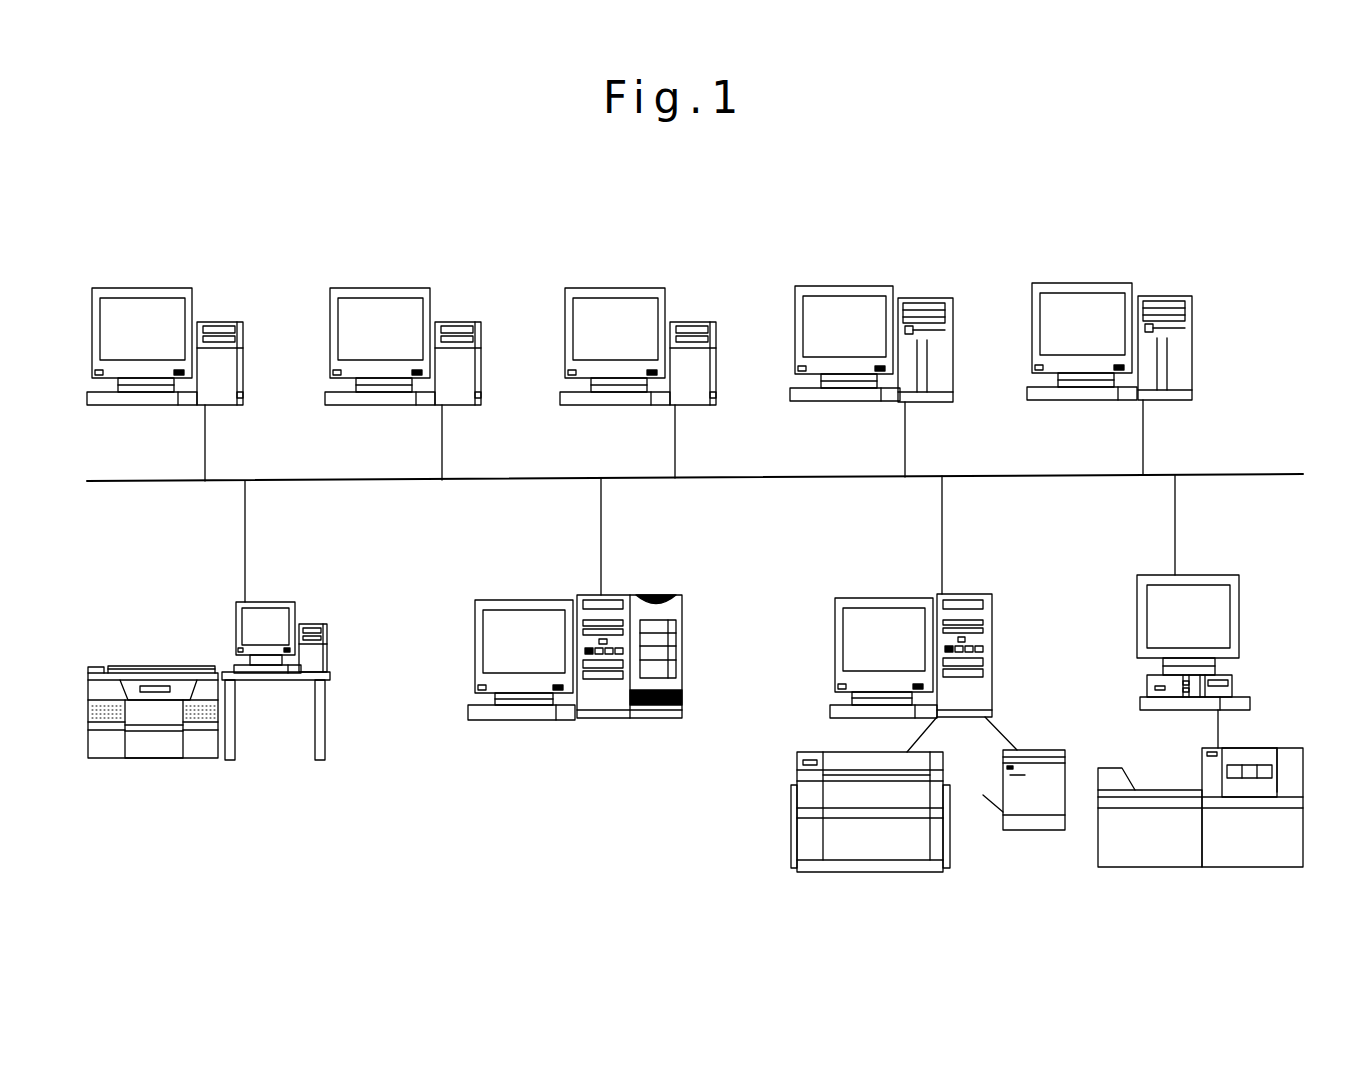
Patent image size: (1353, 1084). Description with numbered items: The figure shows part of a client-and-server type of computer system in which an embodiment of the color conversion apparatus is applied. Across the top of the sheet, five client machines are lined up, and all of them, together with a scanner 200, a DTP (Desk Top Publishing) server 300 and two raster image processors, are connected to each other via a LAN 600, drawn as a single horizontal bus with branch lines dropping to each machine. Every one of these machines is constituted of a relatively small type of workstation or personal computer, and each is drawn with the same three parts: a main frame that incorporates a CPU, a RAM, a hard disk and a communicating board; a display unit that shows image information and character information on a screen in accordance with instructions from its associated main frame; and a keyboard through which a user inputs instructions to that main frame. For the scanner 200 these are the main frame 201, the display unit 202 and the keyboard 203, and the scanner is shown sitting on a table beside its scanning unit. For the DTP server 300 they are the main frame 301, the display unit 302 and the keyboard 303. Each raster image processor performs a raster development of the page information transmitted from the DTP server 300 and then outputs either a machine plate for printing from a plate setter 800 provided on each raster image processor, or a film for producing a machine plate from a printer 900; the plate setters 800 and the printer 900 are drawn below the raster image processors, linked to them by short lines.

The scanner 200 is at (209, 620).
The main frame 201 is at (309, 624).
The display unit 202 is at (236, 615).
The keyboard 203 is at (235, 667).
The DTP server 300 is at (545, 599).
The main frame 301 is at (618, 597).
The display unit 302 is at (476, 612).
The keyboard 303 is at (470, 712).
The LAN 600 is at (1202, 474).
The plate setter 800 is at (914, 872).
The printer 900 is at (1033, 830).